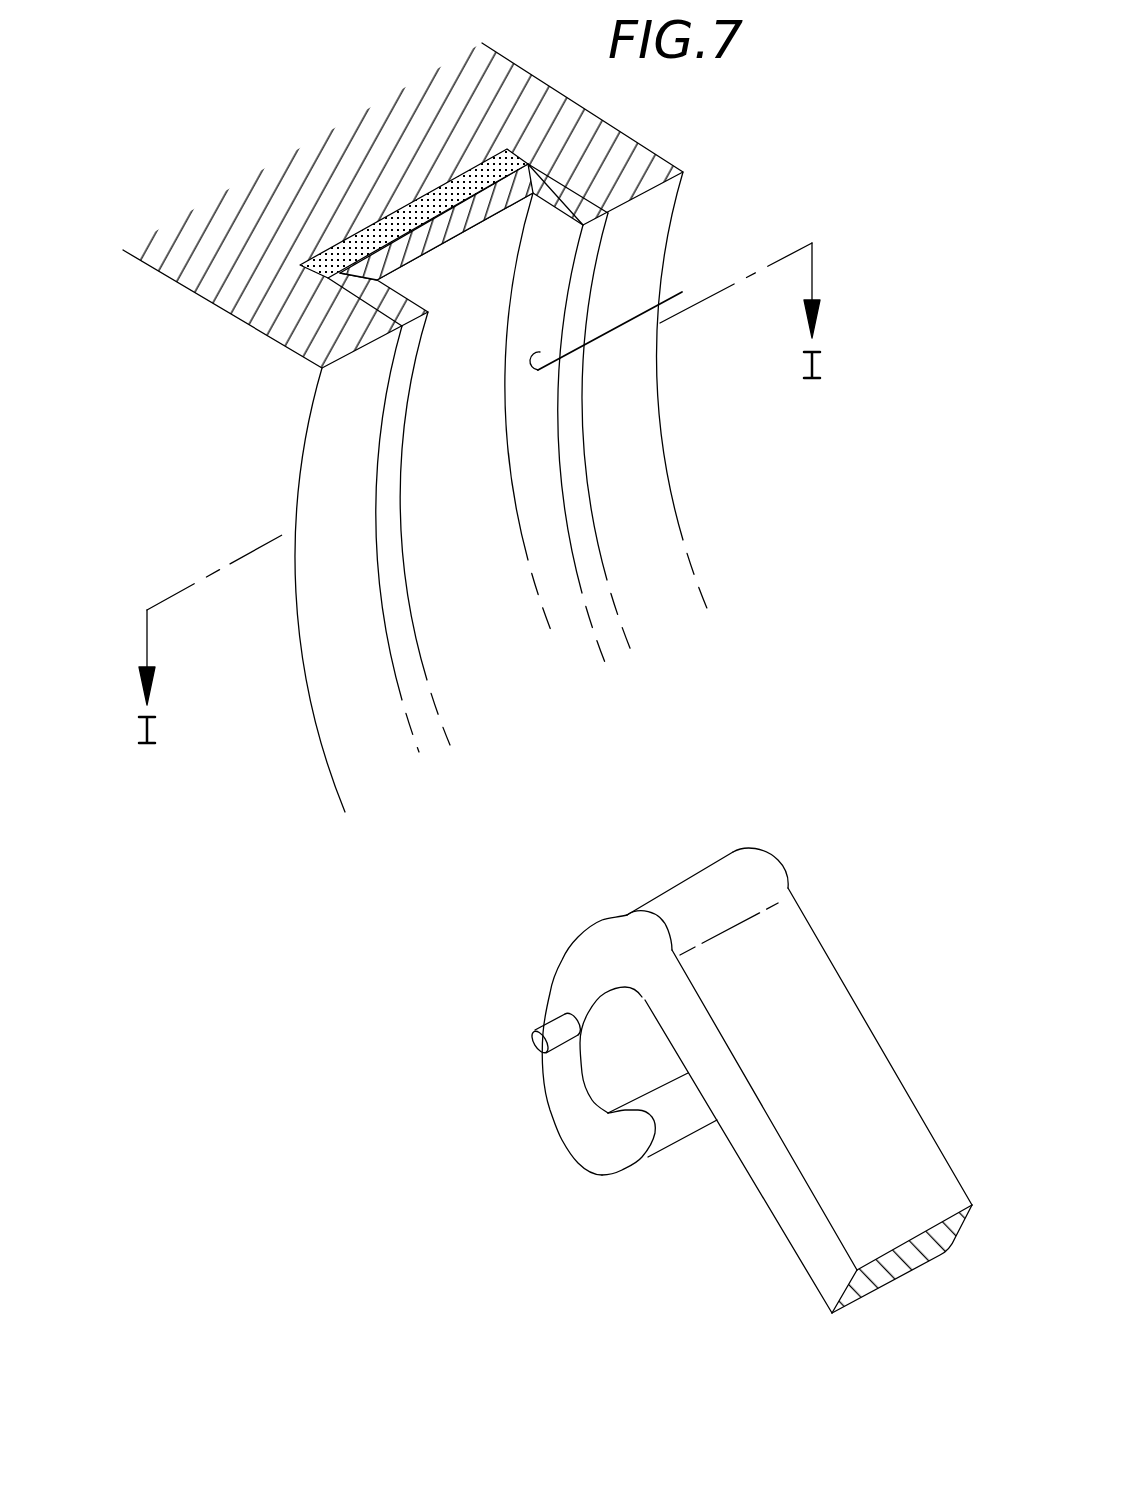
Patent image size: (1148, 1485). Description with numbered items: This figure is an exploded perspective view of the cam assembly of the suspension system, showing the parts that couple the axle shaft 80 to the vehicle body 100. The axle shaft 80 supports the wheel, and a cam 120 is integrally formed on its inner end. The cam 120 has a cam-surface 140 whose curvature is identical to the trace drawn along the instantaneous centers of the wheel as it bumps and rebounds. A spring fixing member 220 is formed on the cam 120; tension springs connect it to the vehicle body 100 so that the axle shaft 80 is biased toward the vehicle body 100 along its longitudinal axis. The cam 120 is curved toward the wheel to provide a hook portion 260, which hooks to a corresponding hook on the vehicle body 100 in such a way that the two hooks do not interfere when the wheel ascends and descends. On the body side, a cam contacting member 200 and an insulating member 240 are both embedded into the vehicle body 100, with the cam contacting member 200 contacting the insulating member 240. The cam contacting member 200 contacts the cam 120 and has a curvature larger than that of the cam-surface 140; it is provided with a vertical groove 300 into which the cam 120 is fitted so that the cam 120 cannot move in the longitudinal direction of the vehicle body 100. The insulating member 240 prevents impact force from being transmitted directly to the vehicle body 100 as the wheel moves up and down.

The vehicle body 100 is at (236, 287).
The cam contacting member 200 is at (533, 167).
The insulating member 240 is at (412, 207).
The vertical groove 300 is at (682, 292).
The axle shaft 80 is at (861, 908).
The cam 120 is at (750, 852).
The cam-surface 140 is at (578, 950).
The spring fixing member 220 is at (531, 1043).
The hook portion 260 is at (636, 1133).